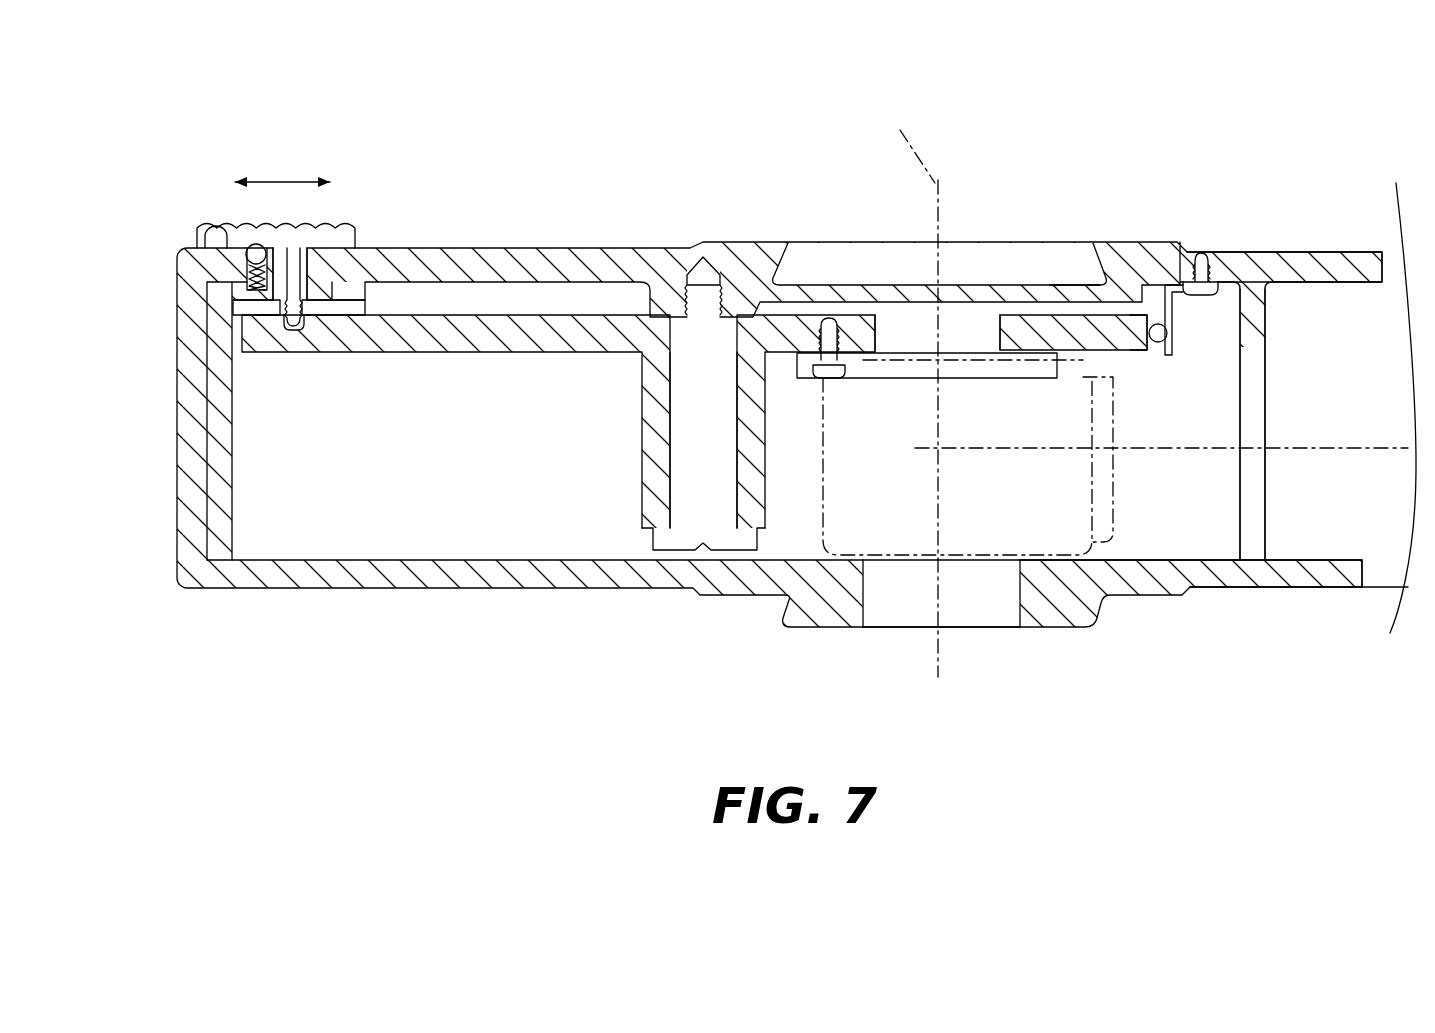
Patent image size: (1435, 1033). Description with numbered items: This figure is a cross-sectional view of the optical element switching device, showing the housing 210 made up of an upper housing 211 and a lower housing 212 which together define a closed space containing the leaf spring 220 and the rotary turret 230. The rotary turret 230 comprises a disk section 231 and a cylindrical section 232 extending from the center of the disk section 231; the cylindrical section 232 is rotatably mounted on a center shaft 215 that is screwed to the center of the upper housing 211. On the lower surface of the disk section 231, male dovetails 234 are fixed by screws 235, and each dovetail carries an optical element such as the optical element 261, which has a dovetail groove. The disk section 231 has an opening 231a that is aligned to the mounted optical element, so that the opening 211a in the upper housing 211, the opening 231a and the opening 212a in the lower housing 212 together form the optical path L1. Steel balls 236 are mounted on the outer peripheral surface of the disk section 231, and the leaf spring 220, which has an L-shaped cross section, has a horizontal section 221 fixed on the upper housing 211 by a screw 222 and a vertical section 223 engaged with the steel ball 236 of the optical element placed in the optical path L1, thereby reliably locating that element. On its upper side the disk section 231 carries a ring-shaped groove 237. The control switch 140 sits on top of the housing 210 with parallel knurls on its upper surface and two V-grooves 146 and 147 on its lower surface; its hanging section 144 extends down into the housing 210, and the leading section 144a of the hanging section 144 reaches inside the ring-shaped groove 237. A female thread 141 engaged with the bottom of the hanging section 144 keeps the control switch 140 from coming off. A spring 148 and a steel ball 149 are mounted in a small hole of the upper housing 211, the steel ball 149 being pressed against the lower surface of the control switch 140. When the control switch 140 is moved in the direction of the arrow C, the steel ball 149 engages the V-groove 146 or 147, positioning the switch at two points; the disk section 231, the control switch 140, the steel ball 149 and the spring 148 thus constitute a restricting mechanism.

The control switch 140 is at (352, 228).
The female thread 141 is at (306, 311).
The hanging section 144 is at (322, 298).
The leading section 144a is at (278, 311).
The V-groove 146 is at (220, 242).
The V-groove 147 is at (260, 264).
The spring 148 is at (223, 283).
The steel ball 149 is at (248, 246).
The housing 210 is at (1146, 232).
The upper housing 211 is at (1312, 257).
The opening 211a is at (1005, 288).
The lower housing 212 is at (1272, 585).
The opening 212a is at (867, 598).
The center shaft 215 is at (692, 440).
The leaf spring 220 is at (1187, 318).
The horizontal section 221 is at (1180, 280).
The screw 222 is at (1248, 300).
The vertical section 223 is at (1132, 290).
The rotary turret 230 is at (549, 340).
The disk section 231 is at (405, 353).
The opening 231a is at (870, 330).
The cylindrical section 232 is at (642, 505).
The male dovetail 234 is at (797, 370).
The screw 235 is at (842, 379).
The steel ball 236 is at (1148, 353).
The ring-shaped groove 237 is at (310, 322).
The optical element 261 is at (1052, 527).
The arrow c C is at (290, 180).
The optical path L1 is at (902, 391).